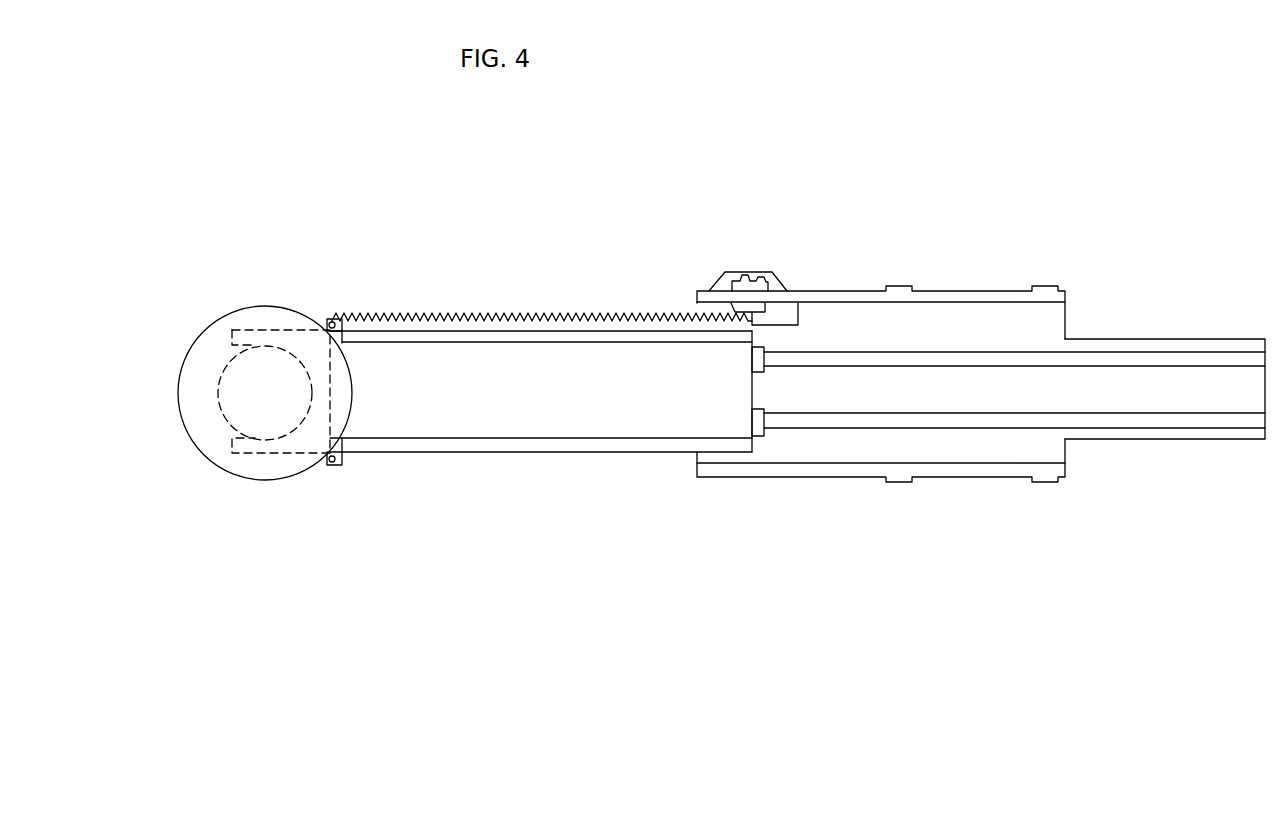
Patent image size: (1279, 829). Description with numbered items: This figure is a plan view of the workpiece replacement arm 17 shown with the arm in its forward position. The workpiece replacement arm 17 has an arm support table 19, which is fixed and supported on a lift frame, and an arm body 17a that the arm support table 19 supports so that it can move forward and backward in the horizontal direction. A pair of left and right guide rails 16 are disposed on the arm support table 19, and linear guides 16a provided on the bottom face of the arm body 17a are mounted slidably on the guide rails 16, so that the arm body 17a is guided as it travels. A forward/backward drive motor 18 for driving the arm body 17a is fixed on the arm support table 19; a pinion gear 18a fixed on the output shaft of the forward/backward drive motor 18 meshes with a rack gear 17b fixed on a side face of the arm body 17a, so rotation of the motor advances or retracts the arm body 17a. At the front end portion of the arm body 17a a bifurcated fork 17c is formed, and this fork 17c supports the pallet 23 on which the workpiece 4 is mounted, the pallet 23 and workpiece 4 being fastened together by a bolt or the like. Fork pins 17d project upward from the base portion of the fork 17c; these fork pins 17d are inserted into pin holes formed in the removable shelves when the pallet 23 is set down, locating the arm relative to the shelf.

The workpiece 4 is at (255, 318).
The bifurcated fork 17c is at (281, 330).
The pallet 23 is at (288, 440).
The fork pins 17d is at (333, 440).
The rack gear 17b is at (598, 315).
The arm body 17a is at (560, 425).
The workpiece replacement arm 17 is at (889, 247).
The forward/backward drive motor 18 is at (778, 270).
The pinion gear 18a is at (743, 275).
The linear guides 16a is at (758, 372).
The guide rails 16 is at (1227, 422).
The arm support table 19 is at (1140, 439).